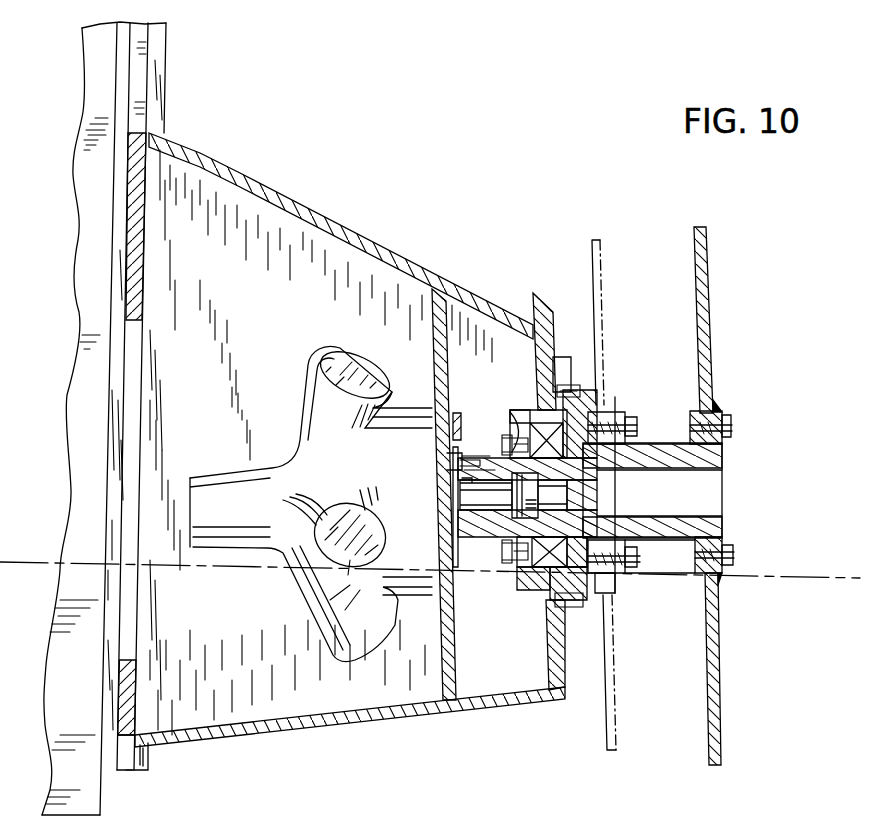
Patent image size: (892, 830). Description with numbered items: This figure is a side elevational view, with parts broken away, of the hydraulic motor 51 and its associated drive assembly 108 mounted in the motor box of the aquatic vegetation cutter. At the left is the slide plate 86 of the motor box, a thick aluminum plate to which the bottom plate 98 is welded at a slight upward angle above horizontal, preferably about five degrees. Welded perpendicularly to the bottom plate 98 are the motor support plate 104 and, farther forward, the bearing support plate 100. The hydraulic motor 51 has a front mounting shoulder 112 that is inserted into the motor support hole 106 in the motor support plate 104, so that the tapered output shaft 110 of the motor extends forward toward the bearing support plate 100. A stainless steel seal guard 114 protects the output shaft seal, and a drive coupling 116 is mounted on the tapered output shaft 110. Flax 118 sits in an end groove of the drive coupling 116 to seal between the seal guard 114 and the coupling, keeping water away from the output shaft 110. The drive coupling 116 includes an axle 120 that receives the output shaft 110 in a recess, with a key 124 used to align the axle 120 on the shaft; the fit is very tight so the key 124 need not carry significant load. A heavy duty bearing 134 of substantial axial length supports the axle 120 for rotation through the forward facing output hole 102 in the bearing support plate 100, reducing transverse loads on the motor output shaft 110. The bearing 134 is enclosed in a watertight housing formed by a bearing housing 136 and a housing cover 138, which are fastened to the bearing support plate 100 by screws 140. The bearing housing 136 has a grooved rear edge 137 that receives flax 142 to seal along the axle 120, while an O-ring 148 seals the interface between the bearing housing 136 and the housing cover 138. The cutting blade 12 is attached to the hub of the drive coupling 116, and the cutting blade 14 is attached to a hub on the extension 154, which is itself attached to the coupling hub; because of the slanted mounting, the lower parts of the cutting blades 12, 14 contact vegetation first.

The cutting blade 12 is at (600, 256).
The cutting blade 14 is at (708, 246).
The hydraulic motor 51 is at (220, 480).
The slide plate 86 is at (125, 768).
The bottom plate 98 is at (218, 738).
The bearing support plate 100 is at (548, 662).
The output hole 102 is at (540, 412).
The motor support plate 104 is at (450, 650).
The motor support hole 106 is at (460, 415).
The drive assembly 108 is at (580, 324).
The tapered output shaft 110 is at (490, 508).
The front mounting shoulder 112 is at (503, 441).
The seal guard 114 is at (450, 456).
The drive coupling 116 is at (547, 467).
The flax 118 is at (502, 550).
The axle 120 is at (575, 465).
The key 124 is at (462, 497).
The bearing 134 is at (600, 412).
The bearing housing 136 is at (590, 412).
The grooved rear edge 137 is at (512, 411).
The housing cover 138 is at (605, 478).
The screws 140 is at (582, 405).
The flax 142 is at (545, 520).
The O-ring 148 is at (555, 385).
The extension 154 is at (722, 522).